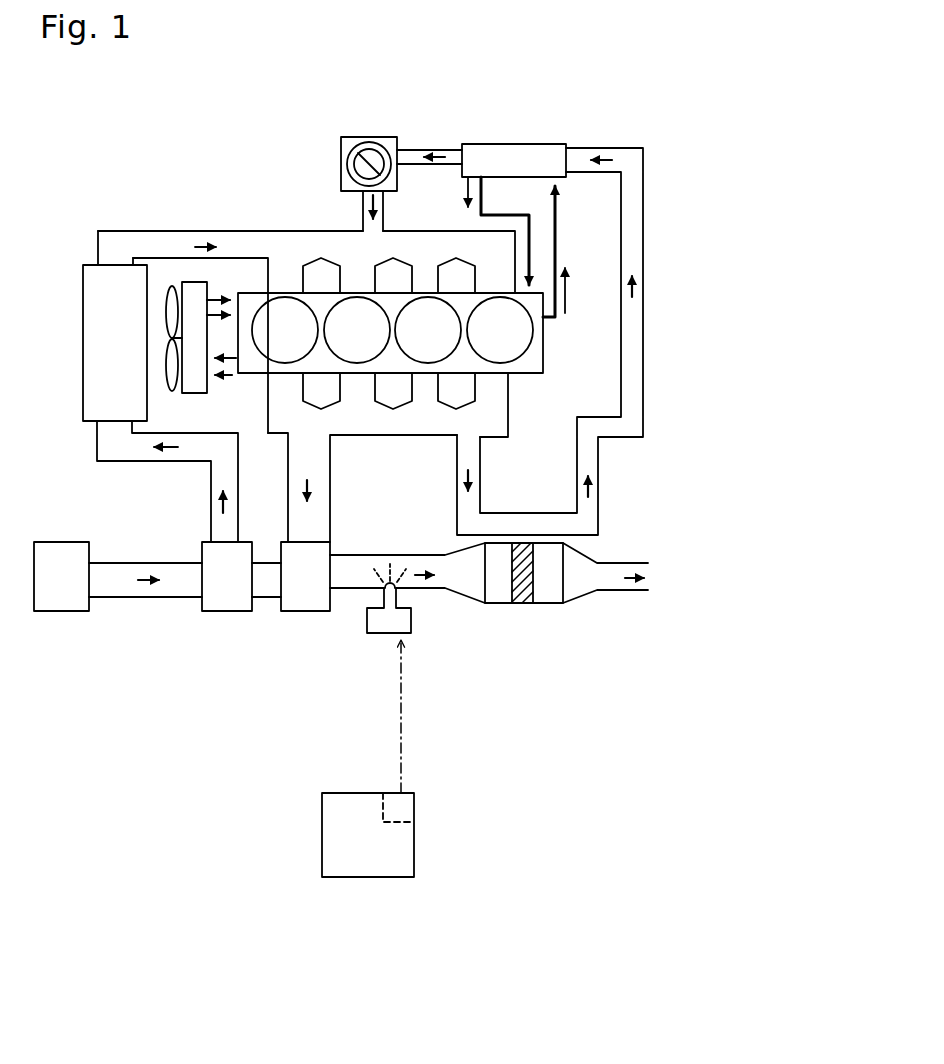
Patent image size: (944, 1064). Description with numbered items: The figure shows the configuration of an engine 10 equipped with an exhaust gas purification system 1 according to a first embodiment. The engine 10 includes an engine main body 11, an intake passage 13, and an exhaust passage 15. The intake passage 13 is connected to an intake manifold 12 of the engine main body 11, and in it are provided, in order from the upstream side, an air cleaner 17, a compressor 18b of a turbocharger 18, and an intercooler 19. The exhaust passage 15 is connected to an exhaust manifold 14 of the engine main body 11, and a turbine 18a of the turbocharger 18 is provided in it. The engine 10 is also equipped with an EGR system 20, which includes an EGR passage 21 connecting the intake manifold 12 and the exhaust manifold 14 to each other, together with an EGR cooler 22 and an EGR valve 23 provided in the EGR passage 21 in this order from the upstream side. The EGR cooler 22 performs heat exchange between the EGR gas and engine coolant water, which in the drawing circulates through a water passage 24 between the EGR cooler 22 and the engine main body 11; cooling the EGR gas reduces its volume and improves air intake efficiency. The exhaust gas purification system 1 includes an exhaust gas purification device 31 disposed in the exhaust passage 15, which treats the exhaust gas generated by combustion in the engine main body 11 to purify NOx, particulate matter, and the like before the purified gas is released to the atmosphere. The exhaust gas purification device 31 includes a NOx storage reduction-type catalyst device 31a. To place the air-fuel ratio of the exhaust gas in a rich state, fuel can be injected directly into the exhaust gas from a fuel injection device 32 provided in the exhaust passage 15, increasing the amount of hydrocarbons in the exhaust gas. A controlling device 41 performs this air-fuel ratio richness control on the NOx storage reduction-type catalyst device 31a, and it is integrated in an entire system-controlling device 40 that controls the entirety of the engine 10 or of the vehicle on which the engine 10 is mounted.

The exhaust gas purification system 1 is at (450, 670).
The engine 10 is at (531, 382).
The engine main body 11 is at (552, 355).
The intake manifold 12 is at (410, 231).
The intake passage 13 is at (128, 598).
The exhaust manifold 14 is at (399, 436).
The exhaust passage 15 is at (353, 590).
The air cleaner 17 is at (70, 613).
The turbocharger 18 is at (253, 657).
The turbine 18a is at (307, 612).
The compressor 18b is at (225, 612).
The intercooler 19 is at (93, 264).
The EGR system 20 is at (604, 86).
The EGR passage 21 is at (600, 485).
The EGR cooler 22 is at (550, 144).
The EGR valve 23 is at (352, 137).
The cooling water passage 24 is at (556, 240).
The exhaust gas purification device 31 is at (492, 605).
The NOx storage reduction-type catalyst device 31a is at (522, 605).
The fuel injection device 32 is at (375, 635).
The entire system-controlling device 40 is at (322, 838).
The controlling device 41 is at (401, 800).